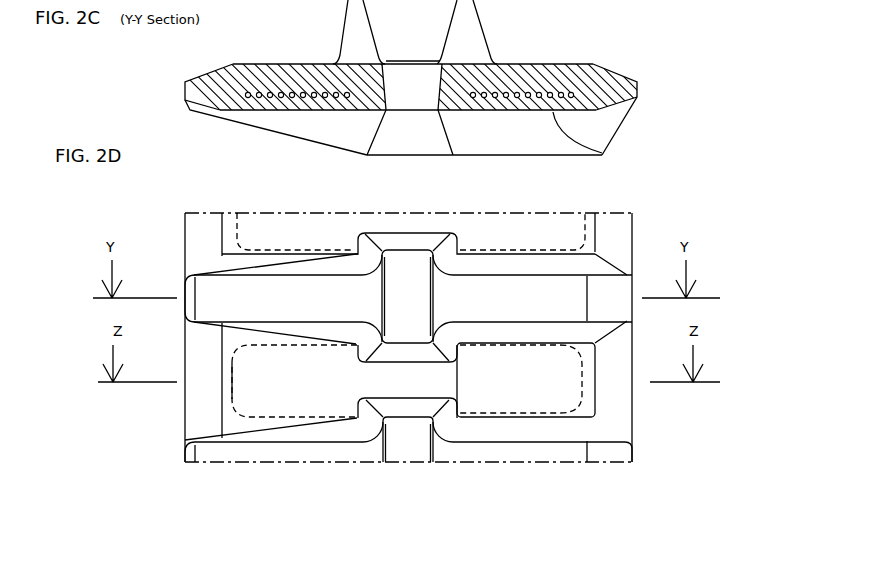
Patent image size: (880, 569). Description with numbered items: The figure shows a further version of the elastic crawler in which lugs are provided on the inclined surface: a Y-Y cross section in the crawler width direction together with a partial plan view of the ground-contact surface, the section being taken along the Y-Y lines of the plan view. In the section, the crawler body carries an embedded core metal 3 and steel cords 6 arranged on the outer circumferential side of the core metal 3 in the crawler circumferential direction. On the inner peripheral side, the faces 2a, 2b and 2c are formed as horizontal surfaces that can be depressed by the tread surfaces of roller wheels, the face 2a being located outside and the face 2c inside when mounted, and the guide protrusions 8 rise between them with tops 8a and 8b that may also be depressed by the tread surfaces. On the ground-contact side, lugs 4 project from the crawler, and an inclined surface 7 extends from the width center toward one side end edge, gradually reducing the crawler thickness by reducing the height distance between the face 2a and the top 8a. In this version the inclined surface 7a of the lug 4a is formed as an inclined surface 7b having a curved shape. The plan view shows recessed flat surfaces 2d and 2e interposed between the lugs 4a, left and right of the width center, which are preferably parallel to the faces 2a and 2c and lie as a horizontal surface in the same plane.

In FIG. 2C, the face 2a is at (268, 64).
In FIG. 2C, the face 2b is at (418, 62).
In FIG. 2C, the face 2c is at (555, 62).
In FIG. 2C, the recessed flat surface 2d is at (602, 153).
In FIG. 2D, the recessed flat surface 2d is at (562, 295).
In FIG. 2C, the recessed flat surface 2e is at (273, 112).
In FIG. 2D, the recessed flat surface 2e is at (273, 297).
In FIG. 2D, the core metal 3 is at (300, 223).
In FIG. 2C, the lug 4 is at (603, 133).
In FIG. 2D, the lug 4 is at (587, 432).
In FIG. 2D, the lug 4a is at (350, 267).
In FIG. 2C, the steel cord 6 is at (302, 92).
In FIG. 2C, the inclined surface 7 is at (532, 157).
In FIG. 2D, the inclined surface 7 is at (575, 408).
In FIG. 2D, the inclined surface 7a is at (247, 425).
In FIG. 2C, the inclined surface having a curved shape 7b is at (273, 133).
In FIG. 2C, the guide protrusion 8 is at (419, 32).
In FIG. 2C, the top of guide protrusion 8a is at (348, 32).
In FIG. 2C, the top of guide protrusion 8b is at (482, 32).